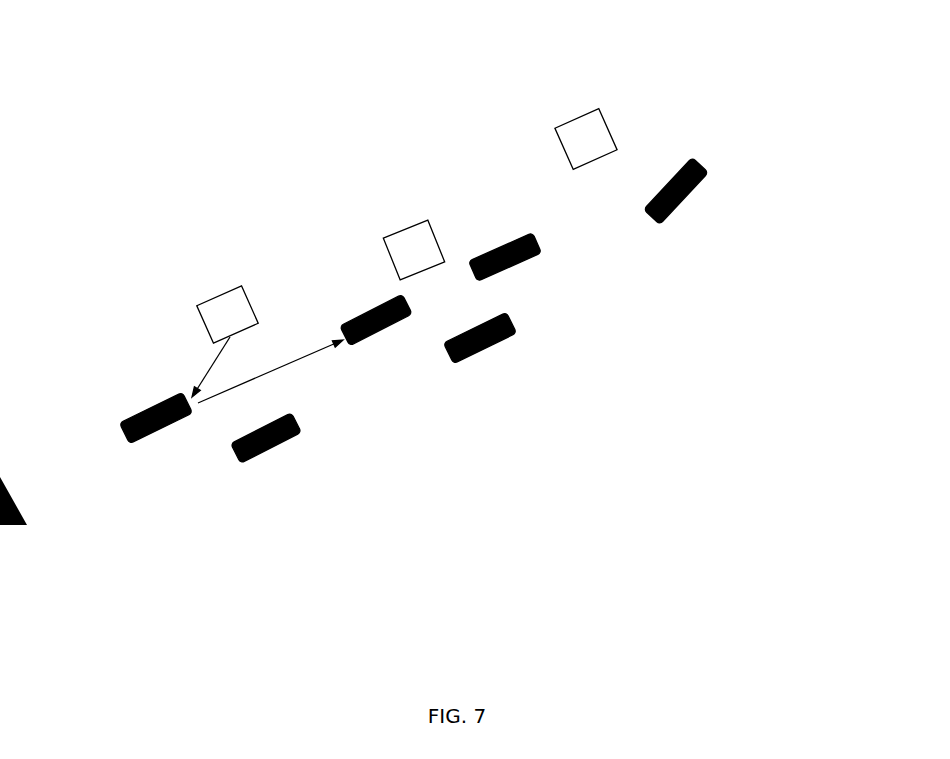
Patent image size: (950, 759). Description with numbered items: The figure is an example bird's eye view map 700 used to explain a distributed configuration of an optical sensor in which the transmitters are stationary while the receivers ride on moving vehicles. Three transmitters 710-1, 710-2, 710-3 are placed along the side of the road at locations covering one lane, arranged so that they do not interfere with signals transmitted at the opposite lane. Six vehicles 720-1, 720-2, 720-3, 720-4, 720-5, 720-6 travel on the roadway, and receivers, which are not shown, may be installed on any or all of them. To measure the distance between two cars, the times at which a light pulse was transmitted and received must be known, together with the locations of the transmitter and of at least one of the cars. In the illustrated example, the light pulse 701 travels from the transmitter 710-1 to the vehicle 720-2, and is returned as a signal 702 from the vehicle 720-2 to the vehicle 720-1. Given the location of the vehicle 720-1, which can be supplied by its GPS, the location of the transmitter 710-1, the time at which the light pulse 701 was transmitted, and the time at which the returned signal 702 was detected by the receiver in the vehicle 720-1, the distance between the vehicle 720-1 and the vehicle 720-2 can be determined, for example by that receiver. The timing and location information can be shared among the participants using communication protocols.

The bird's eye view map 700 is at (745, 70).
The transmitter 710-1 is at (250, 303).
The transmitter 710-2 is at (410, 223).
The transmitter 710-3 is at (607, 126).
The vehicle 720-1 is at (363, 312).
The vehicle 720-2 is at (142, 415).
The vehicle 720-3 is at (518, 235).
The vehicle 720-4 is at (478, 352).
The vehicle 720-5 is at (268, 448).
The vehicle 720-6 is at (672, 213).
The light pulse 701 is at (199, 367).
The returned signal 702 is at (270, 371).